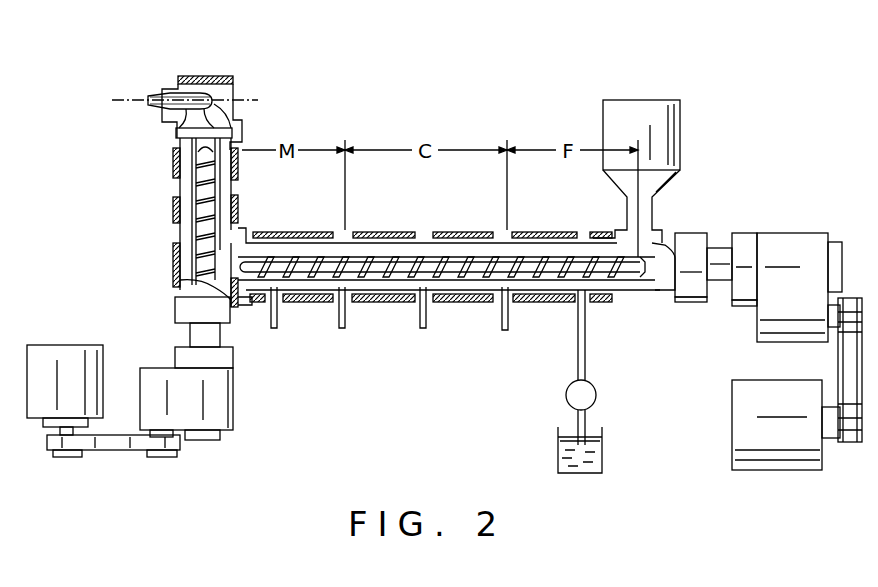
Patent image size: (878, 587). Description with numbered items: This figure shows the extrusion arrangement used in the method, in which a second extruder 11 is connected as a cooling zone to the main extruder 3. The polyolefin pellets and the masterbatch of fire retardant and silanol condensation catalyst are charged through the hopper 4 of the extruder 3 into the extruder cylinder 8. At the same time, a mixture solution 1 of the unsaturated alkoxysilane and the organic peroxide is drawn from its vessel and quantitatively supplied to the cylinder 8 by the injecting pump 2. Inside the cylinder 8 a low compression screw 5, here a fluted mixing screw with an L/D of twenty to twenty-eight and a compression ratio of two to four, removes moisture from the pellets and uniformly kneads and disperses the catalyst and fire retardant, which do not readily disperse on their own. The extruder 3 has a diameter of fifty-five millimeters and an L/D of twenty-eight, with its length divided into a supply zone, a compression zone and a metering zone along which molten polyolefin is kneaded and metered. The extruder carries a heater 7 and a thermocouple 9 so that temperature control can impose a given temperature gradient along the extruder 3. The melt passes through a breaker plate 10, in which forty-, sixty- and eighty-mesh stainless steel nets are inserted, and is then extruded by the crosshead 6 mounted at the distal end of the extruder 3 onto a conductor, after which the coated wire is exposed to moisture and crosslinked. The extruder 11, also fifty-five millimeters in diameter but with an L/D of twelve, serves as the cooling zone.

The mixture solution 1 is at (558, 452).
The injecting pump 2 is at (566, 396).
The extruder 3 is at (701, 233).
The hopper 4 is at (682, 122).
The screw 5 is at (322, 280).
The crosshead 6 is at (160, 110).
The heater 7 is at (219, 75).
The extruder cylinder 8 is at (422, 245).
The thermocouple 9 is at (420, 322).
The breaker plate 10 is at (173, 139).
The extruder 11 is at (227, 187).